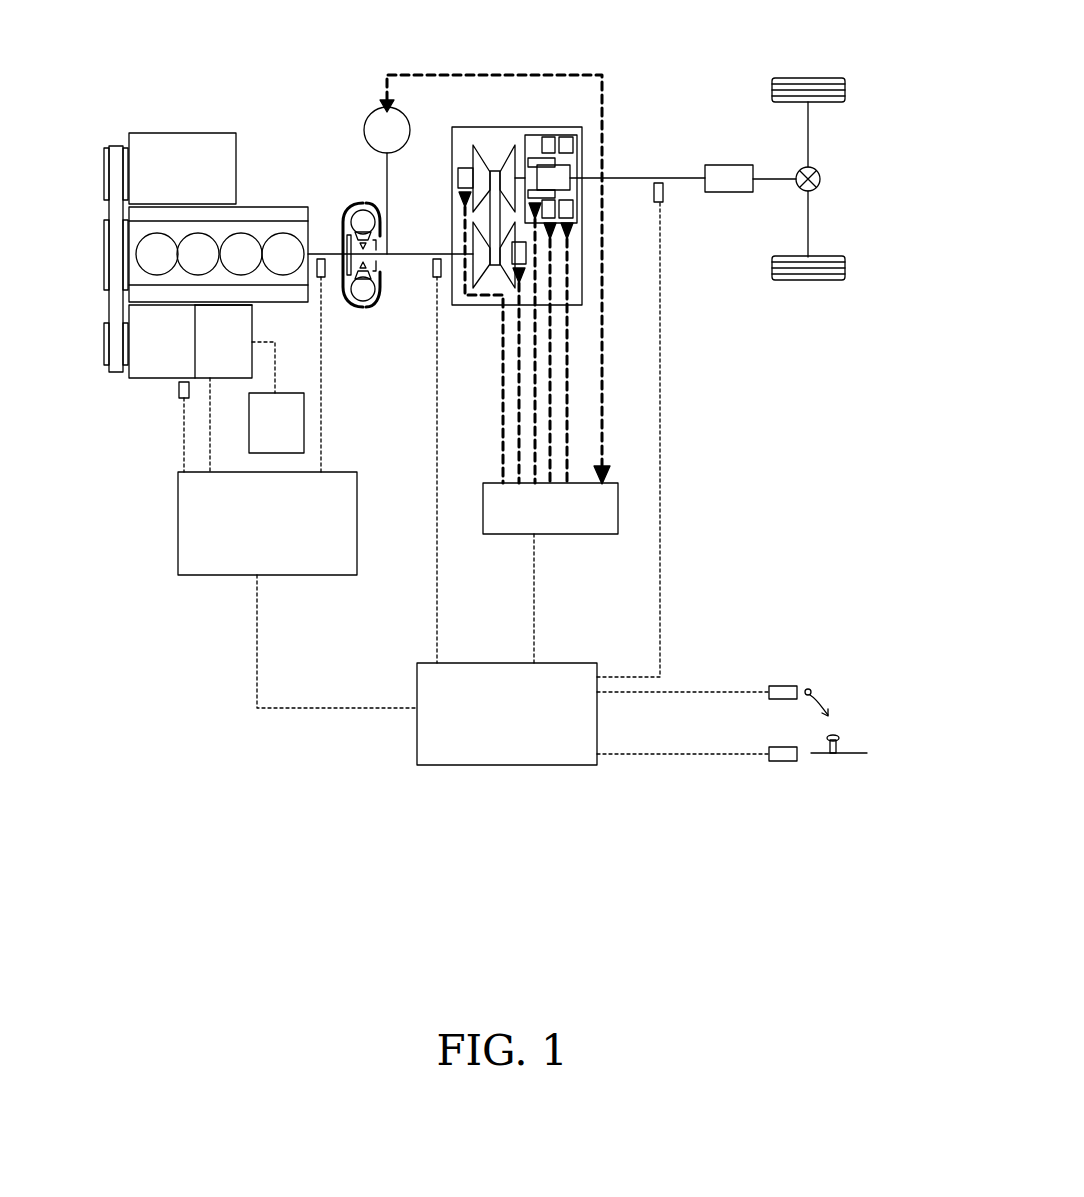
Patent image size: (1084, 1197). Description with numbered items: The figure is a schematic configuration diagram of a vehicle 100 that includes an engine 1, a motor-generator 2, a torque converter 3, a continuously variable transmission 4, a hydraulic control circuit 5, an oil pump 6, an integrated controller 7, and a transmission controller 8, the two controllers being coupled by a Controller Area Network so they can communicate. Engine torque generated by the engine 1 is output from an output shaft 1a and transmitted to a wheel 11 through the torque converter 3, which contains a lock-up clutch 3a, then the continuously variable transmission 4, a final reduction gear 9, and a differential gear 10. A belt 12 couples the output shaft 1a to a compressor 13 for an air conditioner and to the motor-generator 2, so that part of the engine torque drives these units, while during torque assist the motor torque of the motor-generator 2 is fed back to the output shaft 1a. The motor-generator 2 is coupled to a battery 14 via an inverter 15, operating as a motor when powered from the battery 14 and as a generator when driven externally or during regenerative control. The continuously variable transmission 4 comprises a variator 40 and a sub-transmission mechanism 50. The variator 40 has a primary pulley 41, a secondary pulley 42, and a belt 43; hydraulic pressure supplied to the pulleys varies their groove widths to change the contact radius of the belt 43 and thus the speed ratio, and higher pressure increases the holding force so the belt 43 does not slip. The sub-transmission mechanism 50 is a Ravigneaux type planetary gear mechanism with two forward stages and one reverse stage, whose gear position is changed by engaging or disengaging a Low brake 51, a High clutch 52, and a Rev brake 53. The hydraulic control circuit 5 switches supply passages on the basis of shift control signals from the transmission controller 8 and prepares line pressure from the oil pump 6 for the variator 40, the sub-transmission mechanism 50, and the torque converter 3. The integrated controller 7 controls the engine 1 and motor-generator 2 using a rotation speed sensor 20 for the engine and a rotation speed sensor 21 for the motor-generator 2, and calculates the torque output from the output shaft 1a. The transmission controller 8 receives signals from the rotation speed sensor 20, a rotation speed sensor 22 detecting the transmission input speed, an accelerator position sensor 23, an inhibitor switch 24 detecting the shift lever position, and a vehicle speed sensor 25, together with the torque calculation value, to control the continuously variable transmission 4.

The engine 1 is at (259, 216).
The output shaft 1a is at (321, 250).
The motor-generator 2 is at (150, 374).
The torque converter 3 is at (344, 199).
The lock-up clutch 3a is at (347, 245).
The continuously variable transmission 4 is at (455, 127).
The hydraulic control circuit 5 is at (583, 535).
The oil pump 6 is at (364, 132).
The integrated controller 7 is at (196, 576).
The transmission controller 8 is at (583, 766).
The final reduction gear 9 is at (713, 165).
The differential gear 10 is at (822, 176).
The wheel 11 is at (823, 78).
The belt 12 is at (115, 372).
The compressor 13 is at (187, 134).
The battery 14 is at (293, 393).
The inverter 15 is at (242, 379).
The rotation speed sensor 20 is at (326, 278).
The rotation speed sensor 21 is at (182, 399).
The rotation speed sensor 22 is at (436, 276).
The accelerator position sensor 23 is at (779, 686).
The inhibitor switch 24 is at (778, 762).
The vehicle speed sensor 25 is at (655, 202).
The variator 40 is at (485, 141).
The primary pulley 41 is at (482, 292).
The secondary pulley 42 is at (459, 168).
The belt 43 is at (491, 172).
The sub-transmission mechanism 50 is at (560, 132).
The Low brake 51 is at (547, 137).
The High clutch 52 is at (556, 162).
The Rev brake 53 is at (580, 148).
The vehicle 100 is at (272, 870).